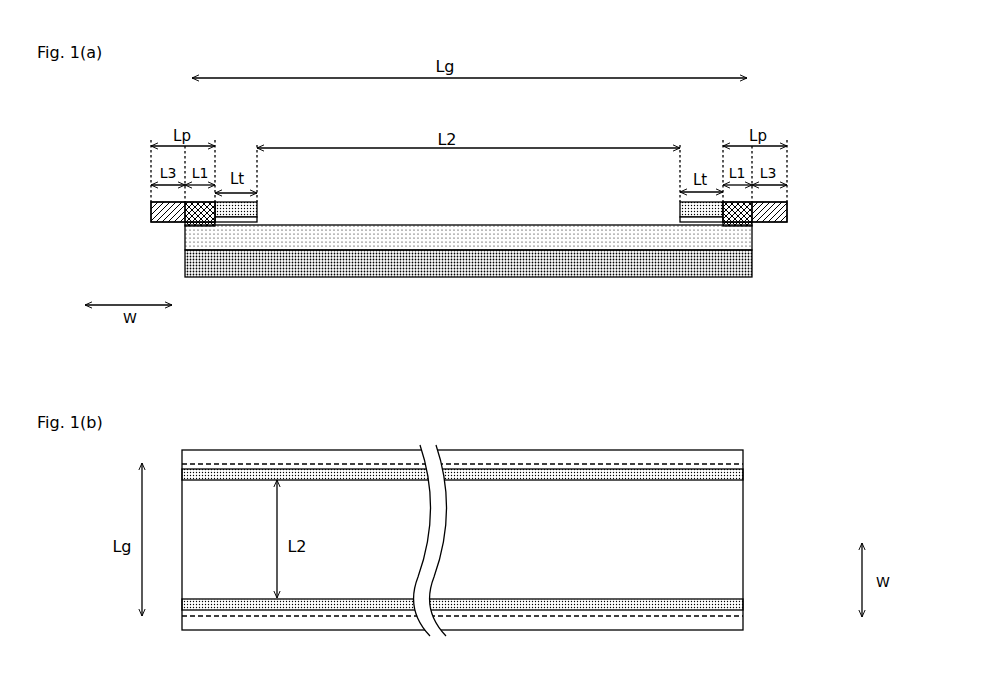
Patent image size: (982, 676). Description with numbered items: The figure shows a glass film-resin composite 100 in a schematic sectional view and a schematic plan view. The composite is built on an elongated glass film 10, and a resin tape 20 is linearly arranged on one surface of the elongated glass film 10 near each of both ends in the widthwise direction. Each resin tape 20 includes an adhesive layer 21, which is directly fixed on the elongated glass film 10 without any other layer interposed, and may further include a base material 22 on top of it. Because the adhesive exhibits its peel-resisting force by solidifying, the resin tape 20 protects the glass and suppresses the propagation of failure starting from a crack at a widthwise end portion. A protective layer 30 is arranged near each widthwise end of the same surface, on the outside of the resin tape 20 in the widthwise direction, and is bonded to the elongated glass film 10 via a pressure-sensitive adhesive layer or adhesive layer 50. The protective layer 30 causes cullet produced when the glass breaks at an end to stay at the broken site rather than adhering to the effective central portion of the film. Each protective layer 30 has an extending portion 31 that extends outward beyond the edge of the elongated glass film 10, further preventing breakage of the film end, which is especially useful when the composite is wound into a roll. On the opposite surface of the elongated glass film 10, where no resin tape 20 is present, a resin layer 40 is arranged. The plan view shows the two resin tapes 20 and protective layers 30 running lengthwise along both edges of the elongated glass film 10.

In FIG. 1A, the glass film-resin composite 100 is at (852, 149).
In FIG. 1B, the glass film-resin composite 100 is at (852, 432).
In FIG. 1A, the elongated glass film 10 is at (755, 240).
In FIG. 1B, the elongated glass film 10 is at (743, 580).
In FIG. 1A, the resin tape 20 is at (469, 200).
In FIG. 1B, the resin tape 20 is at (599, 476).
In FIG. 1A, the adhesive layer 21 is at (257, 221).
In FIG. 1A, the base material 22 is at (257, 204).
In FIG. 1A, the protective layer 30 is at (481, 155).
In FIG. 1B, the protective layer 30 is at (483, 510).
In FIG. 1A, the extending portion 31 is at (185, 122).
In FIG. 1B, the extending portion 31 is at (752, 450).
In FIG. 1A, the resin layer 40 is at (755, 270).
In FIG. 1A, the pressure-sensitive adhesive layer or adhesive layer 50 is at (185, 226).